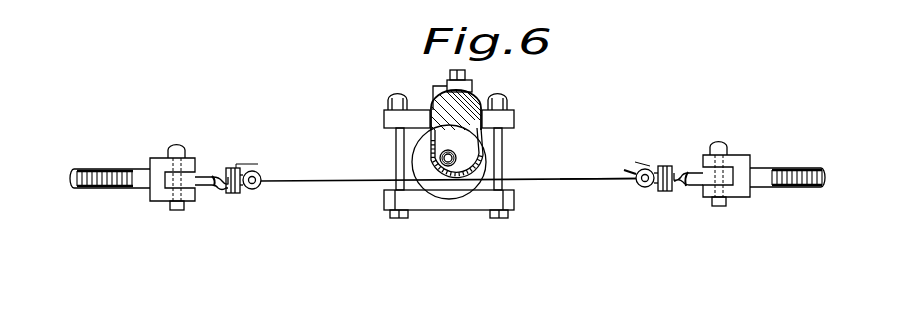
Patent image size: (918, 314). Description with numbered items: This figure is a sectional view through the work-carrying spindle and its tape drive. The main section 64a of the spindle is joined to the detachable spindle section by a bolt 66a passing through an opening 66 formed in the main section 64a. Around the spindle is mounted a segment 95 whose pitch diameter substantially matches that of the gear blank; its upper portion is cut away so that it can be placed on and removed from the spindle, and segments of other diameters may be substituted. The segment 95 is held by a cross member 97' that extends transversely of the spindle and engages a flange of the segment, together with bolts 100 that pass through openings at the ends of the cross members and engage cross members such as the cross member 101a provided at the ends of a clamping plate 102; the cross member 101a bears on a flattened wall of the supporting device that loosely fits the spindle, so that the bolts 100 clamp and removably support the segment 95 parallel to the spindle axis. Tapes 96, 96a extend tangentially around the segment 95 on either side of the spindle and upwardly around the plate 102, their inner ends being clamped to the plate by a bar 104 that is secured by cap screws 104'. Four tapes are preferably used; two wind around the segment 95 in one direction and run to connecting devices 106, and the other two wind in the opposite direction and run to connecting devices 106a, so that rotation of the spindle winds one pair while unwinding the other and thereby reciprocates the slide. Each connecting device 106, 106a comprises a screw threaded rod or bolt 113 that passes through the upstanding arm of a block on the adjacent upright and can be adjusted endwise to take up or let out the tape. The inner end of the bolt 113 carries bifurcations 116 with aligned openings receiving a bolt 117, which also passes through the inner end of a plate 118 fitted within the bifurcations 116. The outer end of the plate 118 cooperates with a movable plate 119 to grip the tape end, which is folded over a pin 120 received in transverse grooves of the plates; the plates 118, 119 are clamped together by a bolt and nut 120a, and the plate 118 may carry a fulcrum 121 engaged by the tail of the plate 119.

The main spindle section 64a is at (494, 160).
The opening 66 is at (393, 187).
The bolt 66a is at (449, 172).
The segment 95 is at (446, 167).
The tape 96 is at (344, 181).
The tape 96a is at (600, 179).
The cross member 97' is at (449, 221).
The bolts 100 is at (396, 152).
The cross member 101a is at (430, 118).
The clamping plate 102 is at (506, 110).
The bar 104 is at (474, 115).
The cap screws 104' is at (486, 76).
The connecting device 106 is at (214, 184).
The connecting device 106a is at (641, 169).
The screw threaded rod 113 is at (101, 189).
The bifurcations 116 is at (160, 202).
The bolt 117 is at (187, 150).
The plate 118 is at (241, 194).
The movable plate 119 is at (214, 188).
The pin 120 is at (663, 165).
The bolt and nut 120a is at (250, 170).
The fulcrum 121 is at (210, 188).